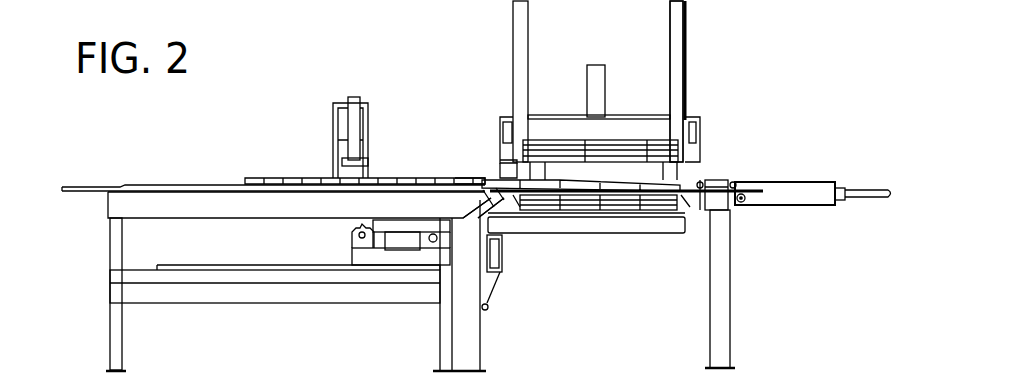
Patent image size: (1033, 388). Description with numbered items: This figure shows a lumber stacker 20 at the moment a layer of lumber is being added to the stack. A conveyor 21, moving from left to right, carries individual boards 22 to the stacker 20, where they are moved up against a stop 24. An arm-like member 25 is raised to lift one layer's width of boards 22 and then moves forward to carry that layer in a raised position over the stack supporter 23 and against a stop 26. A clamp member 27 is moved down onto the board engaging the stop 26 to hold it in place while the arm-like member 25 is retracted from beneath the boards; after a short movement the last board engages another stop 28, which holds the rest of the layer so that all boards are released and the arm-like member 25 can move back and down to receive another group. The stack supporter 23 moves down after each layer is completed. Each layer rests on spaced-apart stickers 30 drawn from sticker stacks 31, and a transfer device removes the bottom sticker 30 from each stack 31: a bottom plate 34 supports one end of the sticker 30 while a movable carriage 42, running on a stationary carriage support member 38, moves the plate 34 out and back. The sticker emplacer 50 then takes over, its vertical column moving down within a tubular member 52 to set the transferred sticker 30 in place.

The lumber stacker 20 is at (700, 58).
The conveyor 21 is at (94, 192).
The boards 22 is at (417, 150).
The stack supporter 23 is at (616, 228).
The stop 24 is at (484, 178).
The arm-like member 25 is at (472, 208).
The stop 26 is at (688, 178).
The clamp member 27 is at (700, 165).
The stop 28 is at (513, 178).
The stickers 30 is at (614, 140).
The sticker stacks 31 is at (686, 110).
The bottom plate 34 is at (520, 178).
The carriage support member 38 is at (497, 125).
The movable carriage 42 is at (700, 152).
The sticker emplacer 50 is at (735, 299).
The tubular member 52 is at (600, 68).